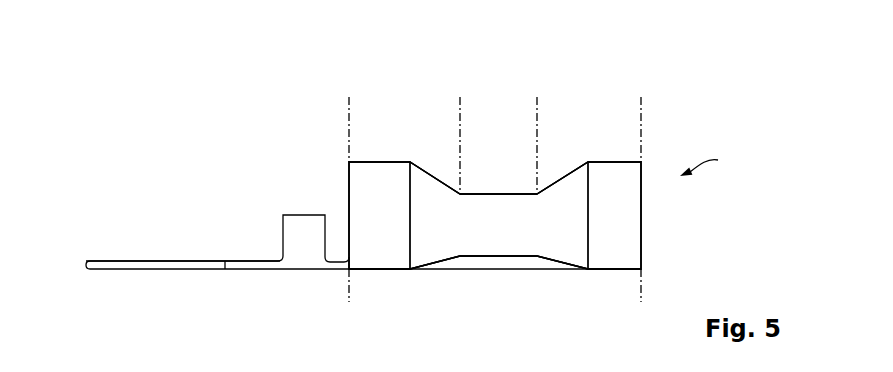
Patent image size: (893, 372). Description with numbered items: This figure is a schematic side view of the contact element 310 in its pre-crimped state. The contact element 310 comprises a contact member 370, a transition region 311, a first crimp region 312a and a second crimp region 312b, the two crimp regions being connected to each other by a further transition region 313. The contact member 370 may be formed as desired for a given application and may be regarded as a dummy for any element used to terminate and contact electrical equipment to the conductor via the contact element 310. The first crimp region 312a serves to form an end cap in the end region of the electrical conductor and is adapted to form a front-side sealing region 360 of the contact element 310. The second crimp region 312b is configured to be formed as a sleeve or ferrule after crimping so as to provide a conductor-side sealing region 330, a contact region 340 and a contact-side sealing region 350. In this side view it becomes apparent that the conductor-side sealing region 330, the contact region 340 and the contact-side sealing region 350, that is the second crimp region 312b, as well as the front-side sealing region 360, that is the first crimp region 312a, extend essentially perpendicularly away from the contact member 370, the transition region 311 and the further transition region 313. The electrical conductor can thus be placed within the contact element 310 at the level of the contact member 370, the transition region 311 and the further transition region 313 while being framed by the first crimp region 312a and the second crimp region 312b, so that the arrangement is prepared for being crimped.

The contact element 310 is at (132, 92).
The transition region 311 is at (255, 261).
The first crimp region 312a is at (325, 215).
The second crimp region 312b is at (641, 302).
The further transition region 313 is at (349, 97).
The conductor-side sealing region 330 is at (641, 97).
The contact region 340 is at (537, 97).
The contact-side sealing region 350 is at (460, 97).
The front-side sealing region 360 is at (305, 82).
The contact member 370 is at (148, 261).